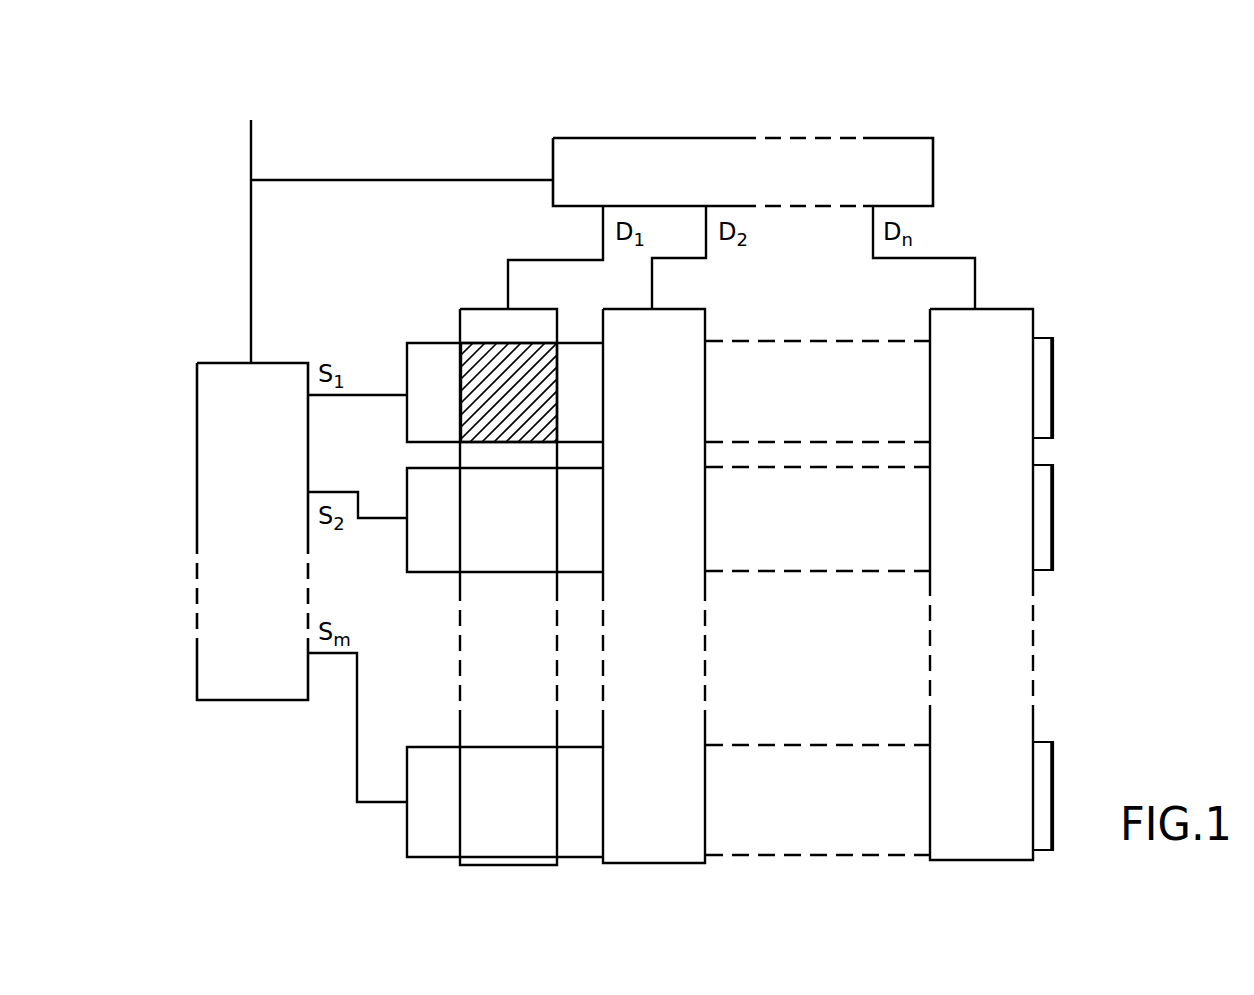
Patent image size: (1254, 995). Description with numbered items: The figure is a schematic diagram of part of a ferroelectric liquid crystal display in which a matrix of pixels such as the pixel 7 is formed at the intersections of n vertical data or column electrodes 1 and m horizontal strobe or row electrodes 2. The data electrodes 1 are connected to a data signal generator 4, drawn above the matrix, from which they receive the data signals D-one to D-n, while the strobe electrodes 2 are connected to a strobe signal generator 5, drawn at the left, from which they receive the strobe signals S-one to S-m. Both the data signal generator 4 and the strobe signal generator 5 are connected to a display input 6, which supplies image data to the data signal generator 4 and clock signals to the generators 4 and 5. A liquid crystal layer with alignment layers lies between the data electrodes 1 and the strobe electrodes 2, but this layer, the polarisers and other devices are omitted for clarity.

The data electrode 1 is at (538, 318).
The strobe electrode 2 is at (407, 356).
The data signal generator 4 is at (933, 158).
The strobe signal generator 5 is at (267, 700).
The display input 6 is at (383, 207).
The pixel 7 is at (493, 362).